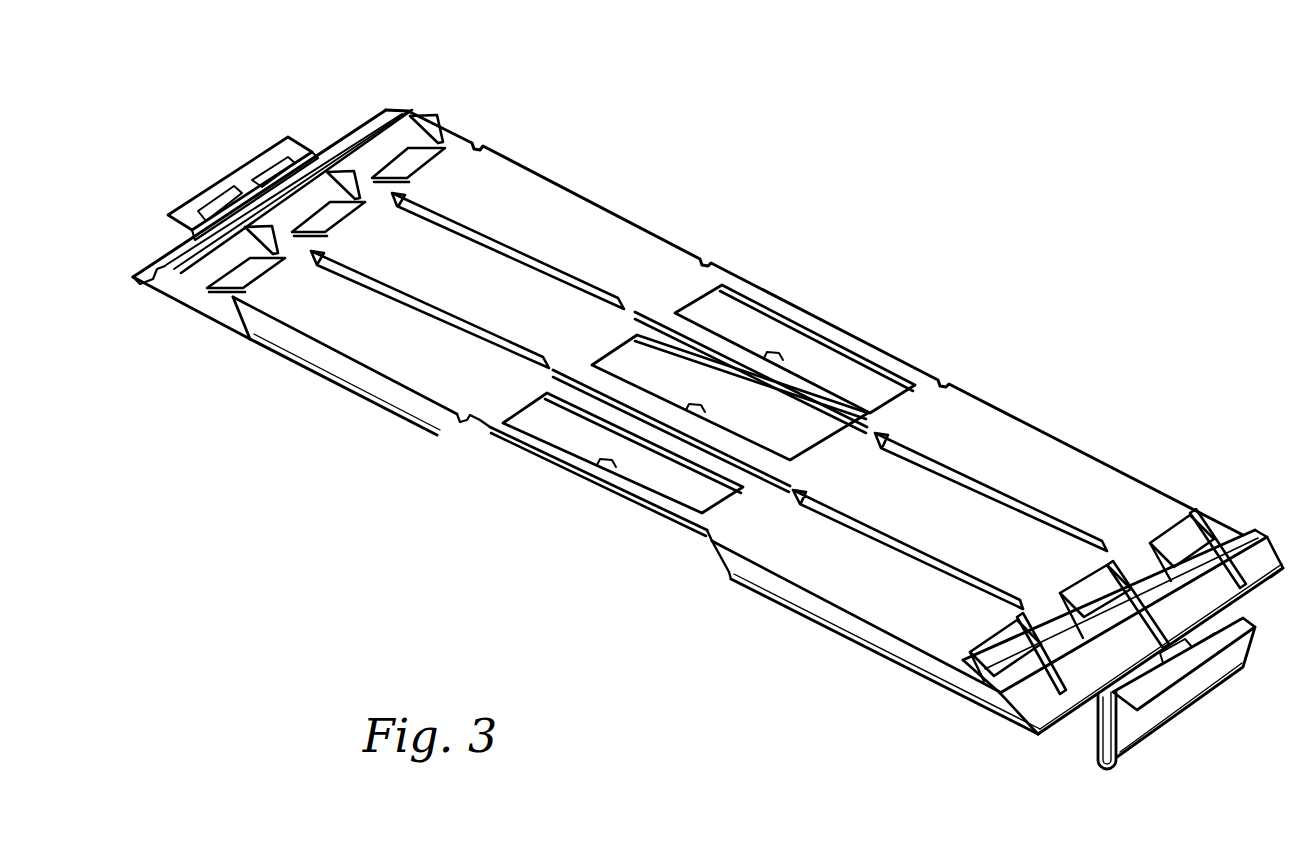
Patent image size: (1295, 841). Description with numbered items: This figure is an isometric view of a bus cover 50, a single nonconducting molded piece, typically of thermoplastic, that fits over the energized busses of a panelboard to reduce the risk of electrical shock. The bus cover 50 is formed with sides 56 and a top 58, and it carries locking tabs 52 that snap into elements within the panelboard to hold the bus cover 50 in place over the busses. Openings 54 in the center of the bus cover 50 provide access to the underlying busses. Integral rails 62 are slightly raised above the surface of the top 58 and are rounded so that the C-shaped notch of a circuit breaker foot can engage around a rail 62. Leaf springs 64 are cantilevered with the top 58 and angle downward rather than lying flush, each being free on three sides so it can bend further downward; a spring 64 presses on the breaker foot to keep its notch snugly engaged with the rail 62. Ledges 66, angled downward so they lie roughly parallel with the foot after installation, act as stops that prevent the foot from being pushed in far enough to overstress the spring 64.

The bus cover 50 is at (676, 150).
The locking tabs 52 is at (187, 207).
The openings 54 is at (784, 340).
The sides 56 is at (340, 364).
The top 58 is at (1016, 440).
The rails 62 is at (408, 104).
The leaf springs 64 is at (240, 268).
The ledges 66 is at (1210, 520).